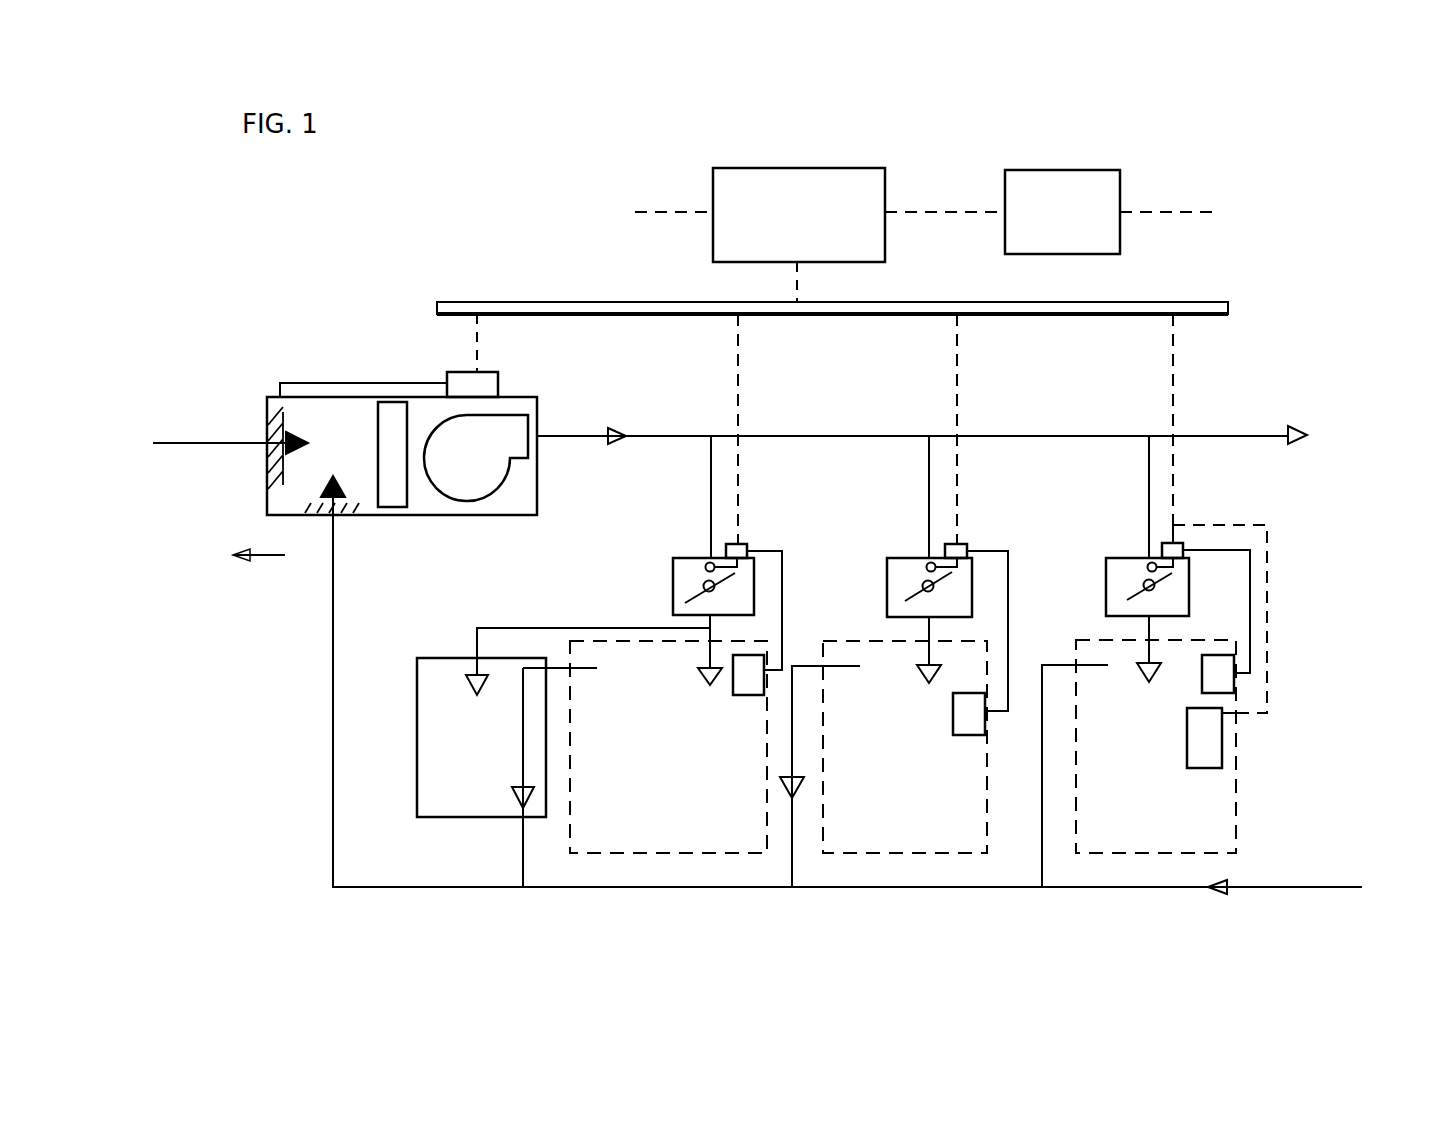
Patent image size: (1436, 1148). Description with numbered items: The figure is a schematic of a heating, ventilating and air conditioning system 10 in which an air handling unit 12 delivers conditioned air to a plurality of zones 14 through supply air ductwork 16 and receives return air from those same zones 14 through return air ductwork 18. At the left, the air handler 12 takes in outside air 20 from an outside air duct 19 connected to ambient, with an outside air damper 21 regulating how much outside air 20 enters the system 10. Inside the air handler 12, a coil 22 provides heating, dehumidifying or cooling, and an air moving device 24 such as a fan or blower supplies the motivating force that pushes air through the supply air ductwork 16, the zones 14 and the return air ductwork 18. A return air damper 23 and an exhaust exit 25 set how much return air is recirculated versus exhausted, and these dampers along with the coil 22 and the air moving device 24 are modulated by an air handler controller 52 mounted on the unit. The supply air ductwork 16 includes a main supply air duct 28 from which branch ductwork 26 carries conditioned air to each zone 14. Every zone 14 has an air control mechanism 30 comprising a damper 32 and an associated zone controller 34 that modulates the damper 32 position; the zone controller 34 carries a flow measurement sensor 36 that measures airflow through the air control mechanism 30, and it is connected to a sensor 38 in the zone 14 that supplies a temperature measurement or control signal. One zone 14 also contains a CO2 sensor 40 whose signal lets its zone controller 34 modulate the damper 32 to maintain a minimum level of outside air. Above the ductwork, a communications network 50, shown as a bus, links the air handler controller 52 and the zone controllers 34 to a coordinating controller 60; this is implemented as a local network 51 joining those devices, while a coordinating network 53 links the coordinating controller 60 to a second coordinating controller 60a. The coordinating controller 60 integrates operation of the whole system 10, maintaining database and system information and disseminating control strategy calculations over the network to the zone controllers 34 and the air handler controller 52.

The HVAC air delivery/conditioning system 10 is at (1184, 143).
The air handling unit 12 is at (537, 397).
The zone 14 is at (613, 821).
The supply air ductwork 16 is at (660, 436).
The return air ductwork 18 is at (332, 750).
The outside air duct 19 is at (197, 447).
The outside air 20 is at (170, 443).
The outside air damper 21 is at (268, 467).
The coil 22 is at (378, 421).
The return air damper 23 is at (350, 517).
The air moving device 24 is at (452, 468).
The exhaust exit 25 is at (270, 562).
The branch ductwork 26 is at (711, 476).
The main supply air duct 28 is at (833, 436).
The air control mechanism 30 is at (673, 577).
The damper 32 is at (700, 598).
The zone controller 34 is at (747, 551).
The flow measurement sensor 36 is at (706, 563).
The sensor 38 is at (745, 695).
The CO2 sensor 40 is at (1190, 730).
The communications network 50 is at (600, 302).
The local network 51 is at (1115, 300).
The air handler controller 52 is at (490, 375).
The coordinating network 53 is at (940, 212).
The coordinating controller 60 is at (782, 228).
The coordinating controller 60a is at (1040, 227).